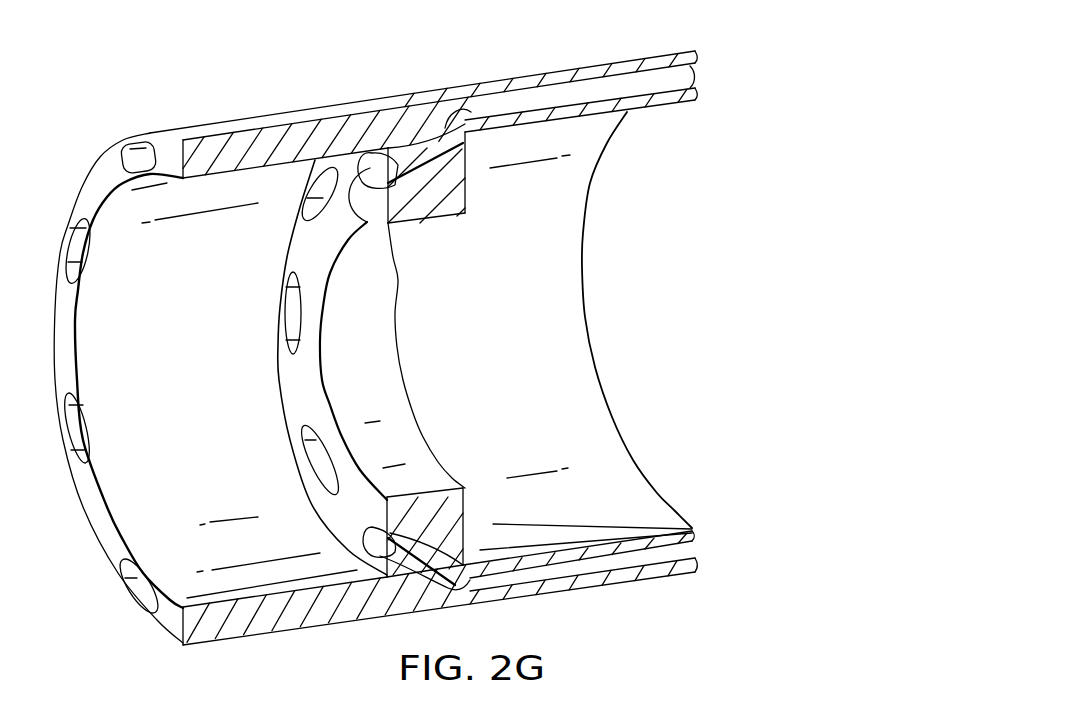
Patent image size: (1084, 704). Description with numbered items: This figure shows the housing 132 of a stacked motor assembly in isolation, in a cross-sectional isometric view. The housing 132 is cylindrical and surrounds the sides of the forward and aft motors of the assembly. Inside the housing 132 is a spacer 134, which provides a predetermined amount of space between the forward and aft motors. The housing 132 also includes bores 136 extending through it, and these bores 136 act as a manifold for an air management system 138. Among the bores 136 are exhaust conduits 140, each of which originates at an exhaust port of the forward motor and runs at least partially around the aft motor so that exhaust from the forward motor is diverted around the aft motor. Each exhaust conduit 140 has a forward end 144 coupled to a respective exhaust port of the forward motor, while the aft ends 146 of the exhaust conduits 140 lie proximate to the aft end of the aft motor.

The housing 132 is at (288, 82).
The spacer 134 is at (390, 312).
The bores 136 is at (633, 90).
The air management system 138 is at (613, 578).
The exhaust conduits 140 is at (583, 83).
The forward end 144 is at (352, 214).
The aft ends 146 is at (692, 90).